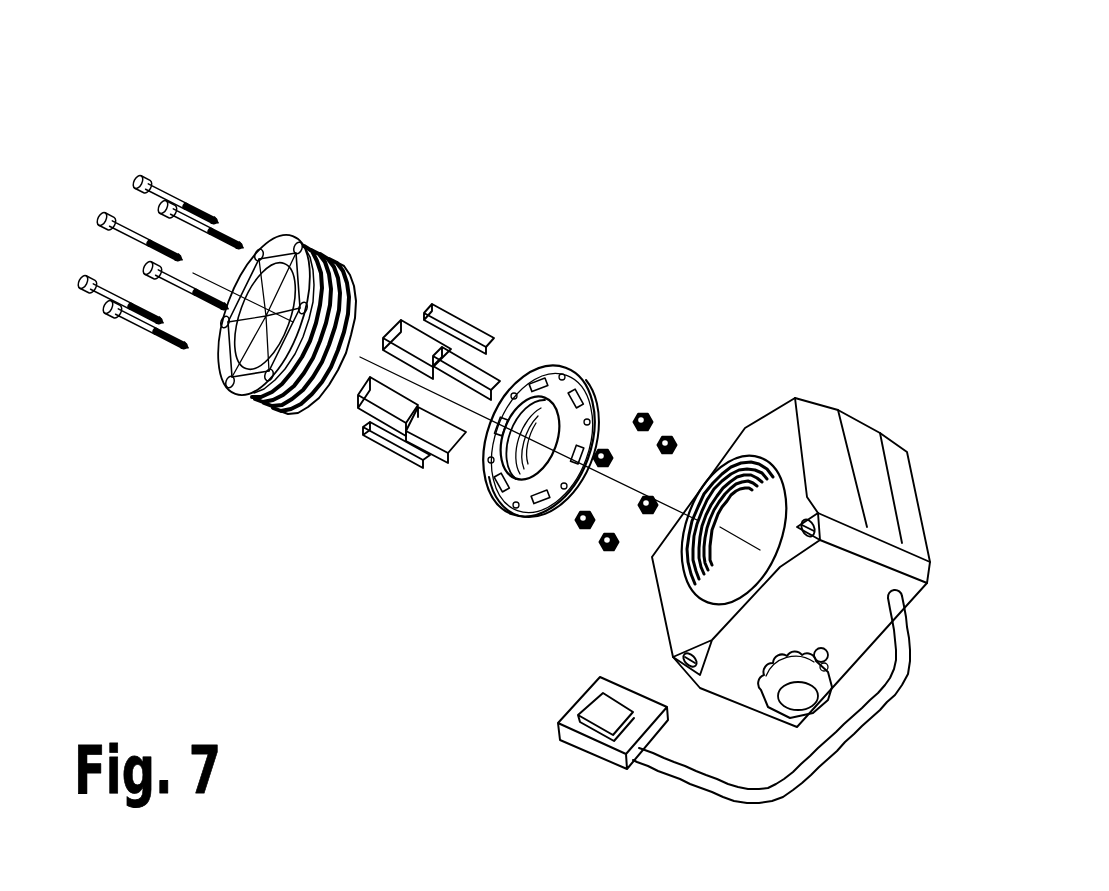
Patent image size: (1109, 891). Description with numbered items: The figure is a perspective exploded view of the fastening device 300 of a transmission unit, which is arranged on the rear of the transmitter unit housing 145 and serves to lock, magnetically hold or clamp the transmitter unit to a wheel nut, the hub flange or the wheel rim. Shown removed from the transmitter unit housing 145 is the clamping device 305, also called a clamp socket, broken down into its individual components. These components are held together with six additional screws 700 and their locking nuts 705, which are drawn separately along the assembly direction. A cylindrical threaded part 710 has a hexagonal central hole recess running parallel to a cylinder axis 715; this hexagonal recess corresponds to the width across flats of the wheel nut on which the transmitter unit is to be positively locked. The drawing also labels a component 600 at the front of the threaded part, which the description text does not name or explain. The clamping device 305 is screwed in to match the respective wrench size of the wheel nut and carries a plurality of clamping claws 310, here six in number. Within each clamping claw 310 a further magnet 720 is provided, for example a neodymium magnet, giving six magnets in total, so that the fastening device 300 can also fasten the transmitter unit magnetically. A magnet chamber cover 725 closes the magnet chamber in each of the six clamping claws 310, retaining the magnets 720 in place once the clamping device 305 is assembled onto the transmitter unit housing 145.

The transmitter unit housing 145 is at (817, 438).
The fastening device 300 is at (134, 87).
The clamping device 305 is at (183, 168).
The clamping claws 310 is at (375, 288).
The cap 600 is at (280, 327).
The screws 700 is at (178, 193).
The locking nuts 705 is at (652, 410).
The cylindrical threaded part 710 is at (205, 376).
The cylinder axis 715 is at (398, 298).
The further magnet 720 is at (457, 322).
The magnet chamber cover 725 is at (558, 368).